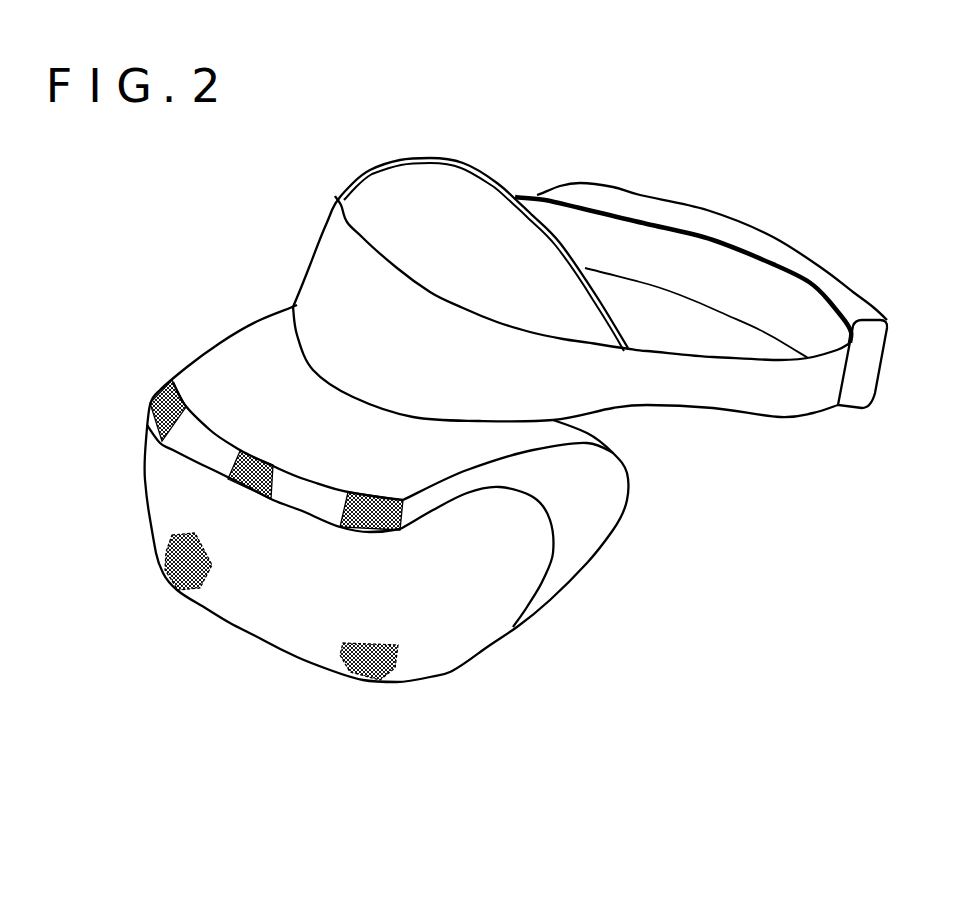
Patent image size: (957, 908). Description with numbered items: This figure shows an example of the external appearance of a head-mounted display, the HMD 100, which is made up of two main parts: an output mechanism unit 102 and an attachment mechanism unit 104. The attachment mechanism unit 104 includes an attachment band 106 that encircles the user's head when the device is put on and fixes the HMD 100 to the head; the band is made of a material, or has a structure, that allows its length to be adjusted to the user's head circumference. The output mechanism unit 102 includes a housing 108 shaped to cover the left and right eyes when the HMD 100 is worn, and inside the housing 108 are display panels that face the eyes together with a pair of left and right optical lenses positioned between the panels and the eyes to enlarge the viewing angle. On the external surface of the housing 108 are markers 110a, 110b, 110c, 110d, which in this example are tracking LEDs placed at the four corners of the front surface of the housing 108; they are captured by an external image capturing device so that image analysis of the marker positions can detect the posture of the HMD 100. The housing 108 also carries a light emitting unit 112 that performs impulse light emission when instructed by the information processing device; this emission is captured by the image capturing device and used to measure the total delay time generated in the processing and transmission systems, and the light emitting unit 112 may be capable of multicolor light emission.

The HMD 100 is at (480, 839).
The output mechanism unit 102 is at (136, 458).
The attachment mechanism unit 104 is at (762, 215).
The attachment band 106 is at (753, 417).
The housing 108 is at (517, 625).
The marker 110a is at (160, 387).
The marker 110b is at (383, 493).
The marker 110c is at (173, 588).
The marker 110d is at (340, 675).
The light emitting unit 112 is at (228, 462).